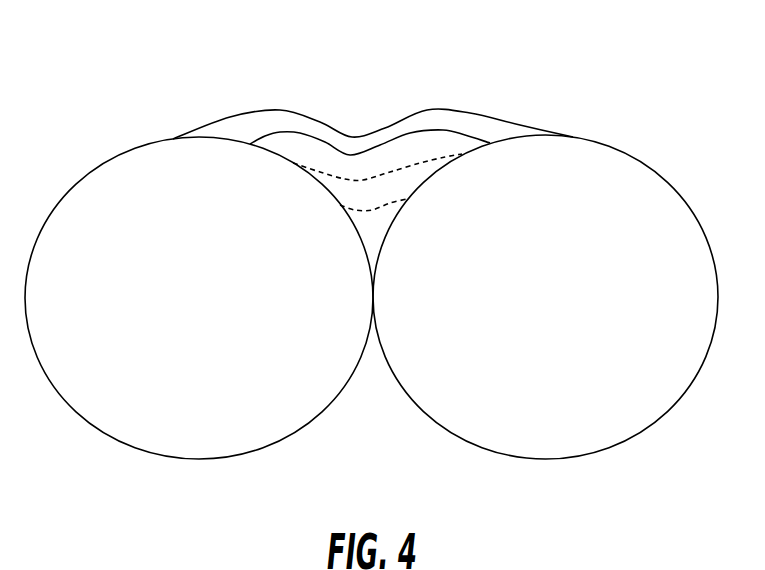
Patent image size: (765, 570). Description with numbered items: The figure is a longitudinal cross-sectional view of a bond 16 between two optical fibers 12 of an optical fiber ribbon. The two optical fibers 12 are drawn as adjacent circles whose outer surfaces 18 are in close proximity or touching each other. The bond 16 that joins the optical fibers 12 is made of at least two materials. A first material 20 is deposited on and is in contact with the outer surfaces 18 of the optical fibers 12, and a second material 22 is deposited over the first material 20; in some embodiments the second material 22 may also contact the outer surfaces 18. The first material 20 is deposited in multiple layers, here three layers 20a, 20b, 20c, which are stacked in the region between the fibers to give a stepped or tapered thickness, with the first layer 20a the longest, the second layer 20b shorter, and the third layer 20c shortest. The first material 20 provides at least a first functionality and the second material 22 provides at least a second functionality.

The optical fiber 12 is at (371, 307).
The bond 16 is at (373, 117).
The outer surface 18 is at (117, 153).
The first material 20 is at (370, 122).
The first layer 20a is at (378, 222).
The second layer 20b is at (352, 193).
The third layer 20c is at (302, 152).
The second material 22 is at (493, 127).